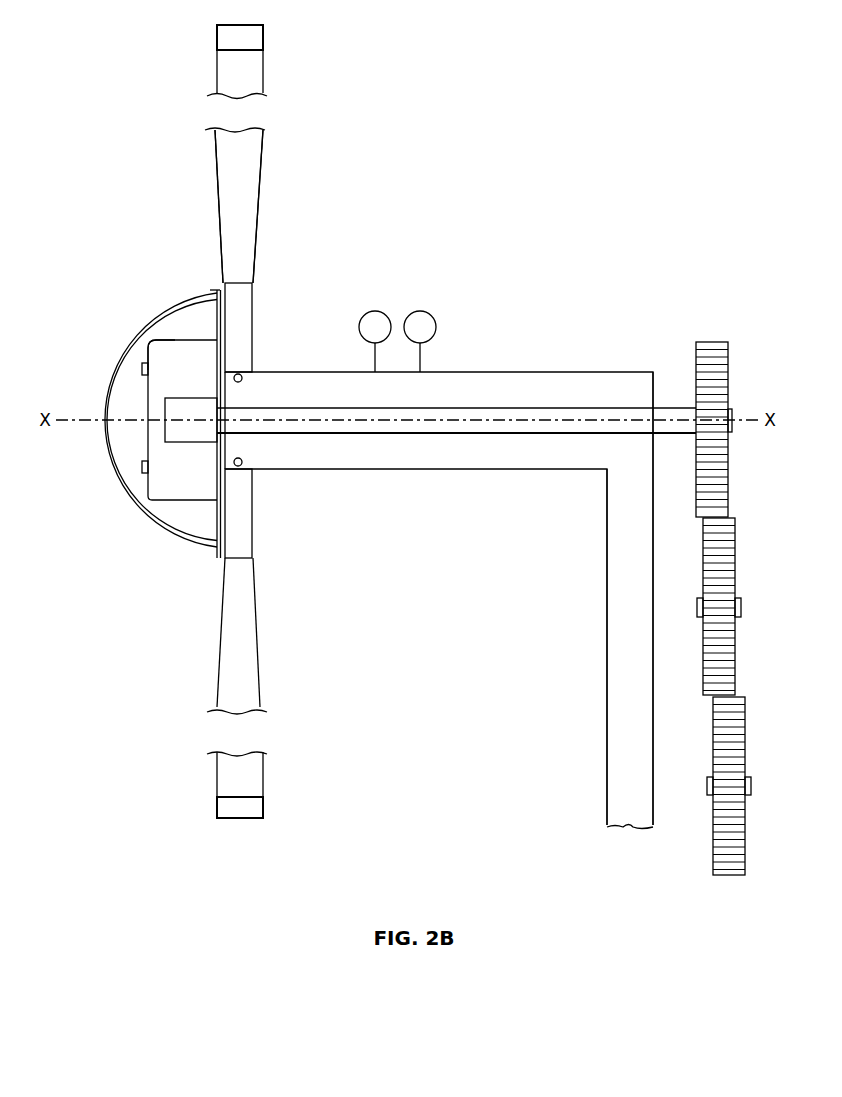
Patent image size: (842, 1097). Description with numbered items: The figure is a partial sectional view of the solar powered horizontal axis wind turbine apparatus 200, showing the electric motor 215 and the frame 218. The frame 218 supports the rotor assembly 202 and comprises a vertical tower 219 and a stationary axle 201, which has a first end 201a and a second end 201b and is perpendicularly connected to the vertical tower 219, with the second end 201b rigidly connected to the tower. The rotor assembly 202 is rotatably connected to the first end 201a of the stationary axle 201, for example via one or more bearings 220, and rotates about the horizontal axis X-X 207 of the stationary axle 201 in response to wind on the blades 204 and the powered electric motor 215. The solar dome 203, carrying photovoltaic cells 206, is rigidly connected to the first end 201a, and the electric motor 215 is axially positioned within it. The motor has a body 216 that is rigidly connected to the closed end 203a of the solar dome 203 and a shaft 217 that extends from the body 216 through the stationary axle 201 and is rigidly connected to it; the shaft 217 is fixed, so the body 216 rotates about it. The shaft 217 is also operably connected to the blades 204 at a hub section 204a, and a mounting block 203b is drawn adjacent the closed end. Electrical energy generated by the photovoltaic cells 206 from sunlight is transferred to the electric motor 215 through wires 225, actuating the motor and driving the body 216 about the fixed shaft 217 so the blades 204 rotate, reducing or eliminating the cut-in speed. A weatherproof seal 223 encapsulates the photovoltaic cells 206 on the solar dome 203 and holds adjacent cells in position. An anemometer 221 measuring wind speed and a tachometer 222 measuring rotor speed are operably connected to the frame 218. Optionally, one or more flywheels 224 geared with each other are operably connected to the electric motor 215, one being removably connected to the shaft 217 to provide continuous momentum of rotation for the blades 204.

The solar powered horizontal axis wind turbine apparatus 200 is at (421, 42).
The stationary axle 201 is at (393, 472).
The first end 201a is at (258, 480).
The second end 201b is at (603, 473).
The rotor assembly 202 is at (199, 163).
The solar dome 203 is at (154, 293).
The closed end 203a is at (217, 330).
The upper mounting block 203b is at (229, 281).
The blades 204 is at (259, 150).
The hub section 204a is at (221, 467).
The photovoltaic cells 206 is at (111, 366).
The horizontal axis X-X 207 is at (679, 417).
The electric motor 215 is at (157, 337).
The body 216 is at (165, 455).
The shaft 217 is at (196, 432).
The frame 218 is at (646, 360).
The vertical tower 219 is at (604, 604).
The bearings 220 is at (241, 459).
The anemometer 221 is at (379, 310).
The tachometer 222 is at (425, 311).
The weatherproof seal 223 is at (120, 343).
The flywheels 224 is at (706, 490).
The wires 225 is at (138, 370).